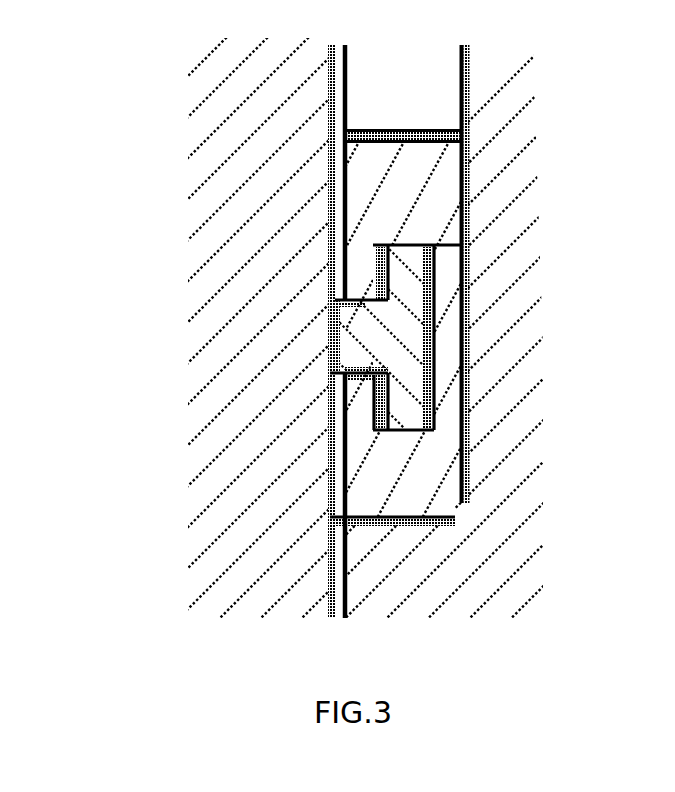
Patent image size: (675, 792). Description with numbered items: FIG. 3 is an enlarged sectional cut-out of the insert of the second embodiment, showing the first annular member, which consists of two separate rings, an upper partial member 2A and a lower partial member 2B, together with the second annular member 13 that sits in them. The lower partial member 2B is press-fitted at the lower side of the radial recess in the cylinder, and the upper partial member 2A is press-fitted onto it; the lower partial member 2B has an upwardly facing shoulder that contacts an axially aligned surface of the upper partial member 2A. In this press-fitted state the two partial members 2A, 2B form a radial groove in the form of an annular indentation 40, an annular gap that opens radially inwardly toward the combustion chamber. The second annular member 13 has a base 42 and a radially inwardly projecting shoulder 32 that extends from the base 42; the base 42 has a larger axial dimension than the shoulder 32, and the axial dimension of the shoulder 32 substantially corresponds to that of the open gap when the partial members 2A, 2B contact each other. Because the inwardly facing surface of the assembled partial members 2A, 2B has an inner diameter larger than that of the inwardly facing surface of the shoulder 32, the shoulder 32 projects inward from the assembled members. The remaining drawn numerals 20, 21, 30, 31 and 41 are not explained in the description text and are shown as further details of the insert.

The upper partial member 2A is at (375, 193).
The lower partial member 2B is at (370, 472).
The second annular member 13 is at (320, 253).
The connector body 20 is at (320, 250).
The pipe wall 21 is at (345, 430).
The outer seal layer 30 is at (333, 329).
The inner seal layer 31 is at (430, 377).
The shoulder 32 is at (362, 327).
The annular indentation 40 is at (375, 385).
The upper seal layer 41 is at (345, 297).
The base 42 is at (413, 299).